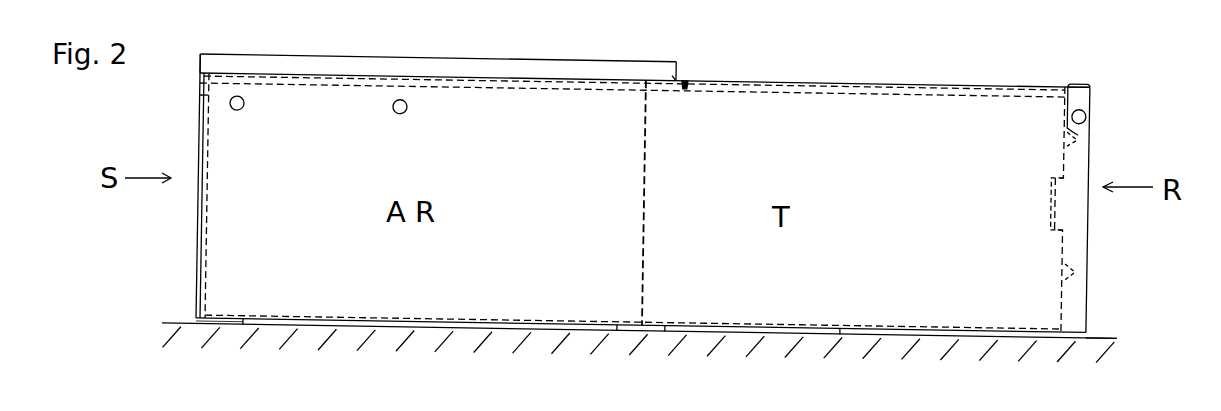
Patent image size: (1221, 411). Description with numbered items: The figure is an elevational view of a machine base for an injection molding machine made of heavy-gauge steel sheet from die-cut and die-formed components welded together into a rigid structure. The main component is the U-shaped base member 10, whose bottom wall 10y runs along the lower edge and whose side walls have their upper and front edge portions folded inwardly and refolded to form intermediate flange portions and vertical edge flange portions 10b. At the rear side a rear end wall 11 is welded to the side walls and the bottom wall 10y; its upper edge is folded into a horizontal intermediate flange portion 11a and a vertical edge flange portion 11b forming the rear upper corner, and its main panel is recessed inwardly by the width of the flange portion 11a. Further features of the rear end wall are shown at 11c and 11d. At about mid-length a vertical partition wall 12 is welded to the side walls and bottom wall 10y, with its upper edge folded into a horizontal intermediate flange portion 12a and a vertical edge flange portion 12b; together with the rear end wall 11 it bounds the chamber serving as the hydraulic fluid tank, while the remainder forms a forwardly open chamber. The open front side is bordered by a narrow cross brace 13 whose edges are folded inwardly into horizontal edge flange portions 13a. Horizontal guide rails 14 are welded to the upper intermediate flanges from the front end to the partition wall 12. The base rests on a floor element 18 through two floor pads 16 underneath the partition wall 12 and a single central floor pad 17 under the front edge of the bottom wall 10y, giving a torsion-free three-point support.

The base member 10 is at (437, 278).
The edge flange portion 10b is at (500, 83).
The bottom wall 10y is at (840, 340).
The rear end wall 11 is at (1060, 243).
The horizontal intermediate flange portion 11a is at (1082, 83).
The vertical edge flange portion 11b is at (1095, 92).
The panel opening 11c is at (1077, 135).
The panel recess 11d is at (1073, 218).
The partition wall 12 is at (643, 194).
The horizontal intermediate flange portion 12a is at (671, 79).
The vertical edge flange portion 12b is at (693, 80).
The cross brace 13 is at (205, 101).
The horizontal edge flange portion 13a is at (208, 70).
The guide rail 14 is at (430, 66).
The floor pad 16 is at (650, 333).
The floor pad 17 is at (217, 322).
The base support 18 is at (1105, 334).